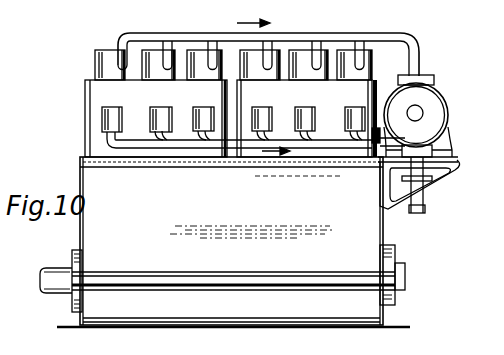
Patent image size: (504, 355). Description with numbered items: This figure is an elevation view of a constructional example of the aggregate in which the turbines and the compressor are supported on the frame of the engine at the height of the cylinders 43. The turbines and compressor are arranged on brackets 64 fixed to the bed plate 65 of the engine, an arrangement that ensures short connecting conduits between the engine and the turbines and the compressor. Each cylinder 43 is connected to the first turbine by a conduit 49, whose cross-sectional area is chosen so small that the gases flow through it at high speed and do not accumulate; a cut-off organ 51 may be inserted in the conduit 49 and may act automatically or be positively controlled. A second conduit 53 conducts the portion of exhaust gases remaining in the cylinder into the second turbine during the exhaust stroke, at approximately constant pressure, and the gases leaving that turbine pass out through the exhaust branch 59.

The cylinders 43 is at (84, 97).
The conduit 49 is at (178, 143).
The cut-off organ 51 is at (122, 110).
The second conduit 53 is at (396, 37).
The exhaust branch 59 is at (425, 204).
The brackets 64 is at (432, 183).
The bed plate 65 is at (225, 237).